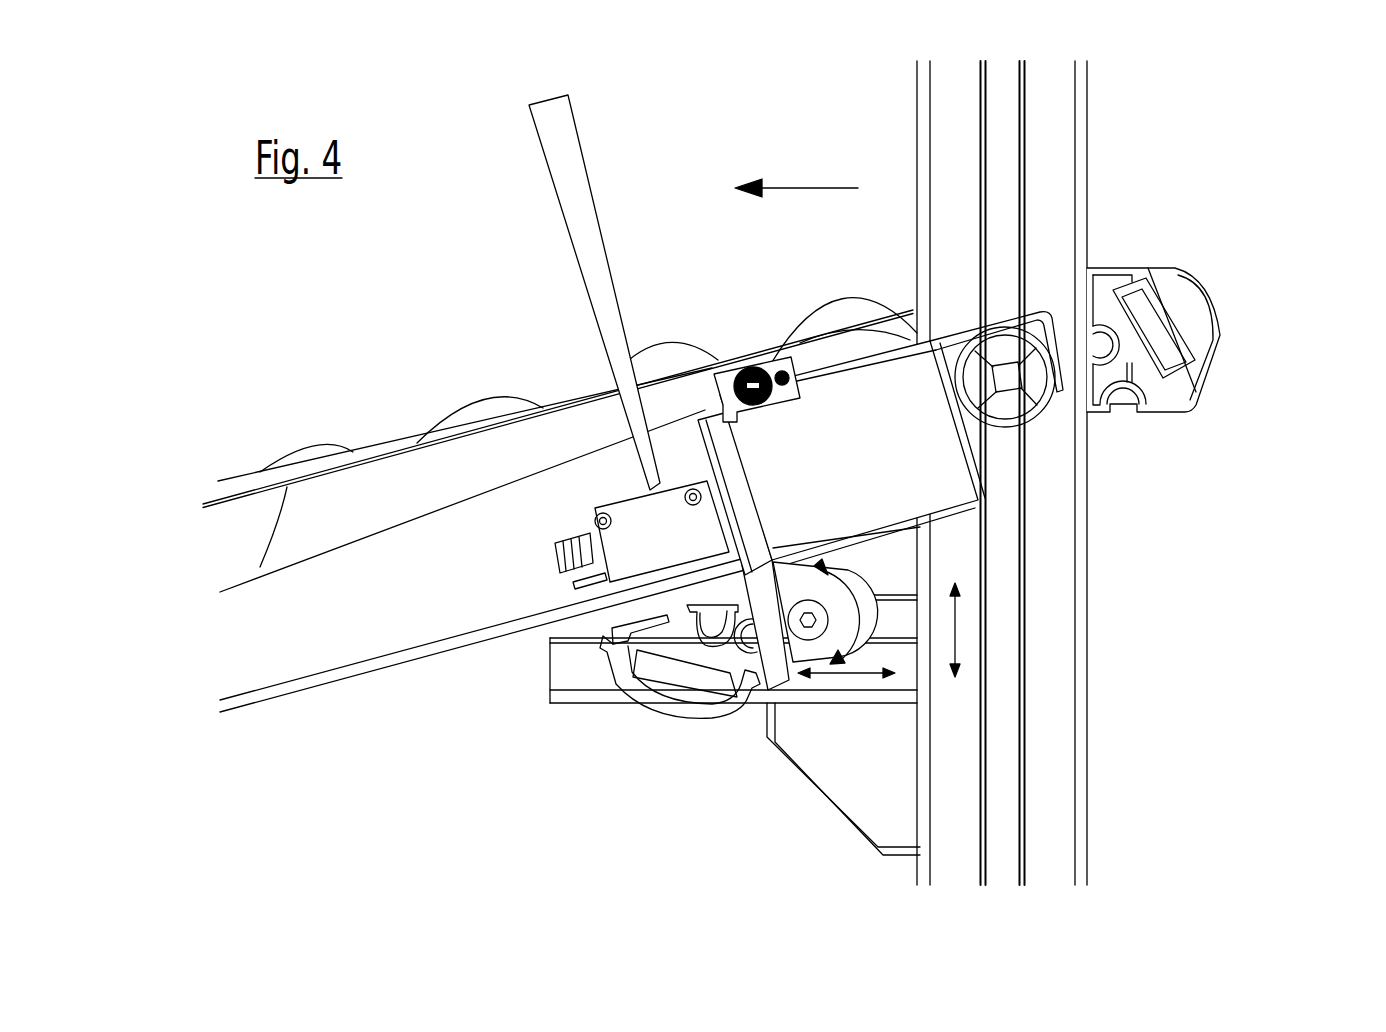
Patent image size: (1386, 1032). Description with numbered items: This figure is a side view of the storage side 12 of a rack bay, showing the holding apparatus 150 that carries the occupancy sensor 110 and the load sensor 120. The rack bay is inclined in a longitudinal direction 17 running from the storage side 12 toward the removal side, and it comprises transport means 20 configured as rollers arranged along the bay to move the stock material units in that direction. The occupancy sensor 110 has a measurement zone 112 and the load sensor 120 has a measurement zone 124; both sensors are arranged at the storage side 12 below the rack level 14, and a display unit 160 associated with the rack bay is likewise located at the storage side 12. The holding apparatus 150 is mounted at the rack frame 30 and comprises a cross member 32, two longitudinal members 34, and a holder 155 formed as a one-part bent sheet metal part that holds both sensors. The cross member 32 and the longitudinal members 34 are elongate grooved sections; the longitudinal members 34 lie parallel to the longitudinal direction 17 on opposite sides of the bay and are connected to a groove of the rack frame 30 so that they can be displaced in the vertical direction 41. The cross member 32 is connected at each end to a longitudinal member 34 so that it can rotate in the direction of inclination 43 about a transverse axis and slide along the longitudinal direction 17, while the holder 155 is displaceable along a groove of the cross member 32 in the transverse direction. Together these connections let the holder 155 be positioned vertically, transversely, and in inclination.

The storage side 12 is at (1184, 182).
The rack level 14 is at (745, 350).
The longitudinal direction 17 is at (796, 165).
The transport means 20 is at (493, 397).
The rack frame 30 is at (1088, 728).
The cross member 32 is at (670, 712).
The longitudinal members 34 is at (573, 703).
The vertical direction 41 is at (955, 622).
The direction of inclination 43 is at (850, 578).
The occupancy sensor 110 is at (792, 400).
The measurement zone 112 is at (378, 452).
The load sensor 120 is at (676, 555).
The measurement zone 124 is at (592, 188).
The holding apparatus 150 is at (776, 583).
The holder 155 is at (747, 503).
The display unit 160 is at (1222, 334).